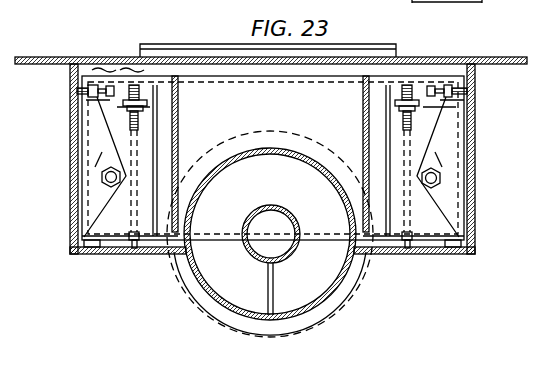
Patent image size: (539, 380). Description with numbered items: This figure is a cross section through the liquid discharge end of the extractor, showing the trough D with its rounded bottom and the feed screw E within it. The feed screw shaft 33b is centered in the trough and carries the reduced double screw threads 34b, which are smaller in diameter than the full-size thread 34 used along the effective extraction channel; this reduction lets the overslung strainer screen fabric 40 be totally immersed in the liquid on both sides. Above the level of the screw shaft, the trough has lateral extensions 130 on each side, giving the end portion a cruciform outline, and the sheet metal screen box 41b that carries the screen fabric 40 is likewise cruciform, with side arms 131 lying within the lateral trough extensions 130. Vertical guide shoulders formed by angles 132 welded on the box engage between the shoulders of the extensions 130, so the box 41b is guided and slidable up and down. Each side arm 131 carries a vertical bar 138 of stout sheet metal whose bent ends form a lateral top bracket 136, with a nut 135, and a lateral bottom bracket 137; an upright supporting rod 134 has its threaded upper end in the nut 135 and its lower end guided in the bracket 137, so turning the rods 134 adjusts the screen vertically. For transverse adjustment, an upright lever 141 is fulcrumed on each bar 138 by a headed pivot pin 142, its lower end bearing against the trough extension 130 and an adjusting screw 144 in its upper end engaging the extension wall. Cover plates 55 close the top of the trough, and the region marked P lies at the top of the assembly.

The cover plate 55 is at (46, 57).
The screen box 41b is at (117, 57).
The part P is at (471, 3).
The lateral trough extension 130 is at (71, 132).
The side arm of screen box 131 is at (85, 110).
The adjusting screw 144 is at (77, 91).
The nut 135 is at (142, 98).
The vertical bar 138 is at (150, 108).
The lateral top bracket 136 is at (160, 100).
The angle 132 is at (178, 142).
The supporting rod 134 is at (119, 255).
The lateral bottom bracket 137 is at (88, 243).
The upright lever 141 is at (98, 200).
The headed pivot pin 142 is at (100, 176).
The strainer screen fabric 40 is at (268, 147).
The screw thread 34 is at (298, 134).
The feed screw E is at (237, 296).
The extractor trough D is at (190, 279).
The feed screw shaft 33b is at (271, 234).
The double screw thread 34b is at (327, 288).